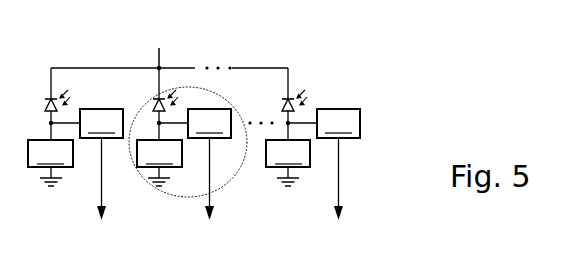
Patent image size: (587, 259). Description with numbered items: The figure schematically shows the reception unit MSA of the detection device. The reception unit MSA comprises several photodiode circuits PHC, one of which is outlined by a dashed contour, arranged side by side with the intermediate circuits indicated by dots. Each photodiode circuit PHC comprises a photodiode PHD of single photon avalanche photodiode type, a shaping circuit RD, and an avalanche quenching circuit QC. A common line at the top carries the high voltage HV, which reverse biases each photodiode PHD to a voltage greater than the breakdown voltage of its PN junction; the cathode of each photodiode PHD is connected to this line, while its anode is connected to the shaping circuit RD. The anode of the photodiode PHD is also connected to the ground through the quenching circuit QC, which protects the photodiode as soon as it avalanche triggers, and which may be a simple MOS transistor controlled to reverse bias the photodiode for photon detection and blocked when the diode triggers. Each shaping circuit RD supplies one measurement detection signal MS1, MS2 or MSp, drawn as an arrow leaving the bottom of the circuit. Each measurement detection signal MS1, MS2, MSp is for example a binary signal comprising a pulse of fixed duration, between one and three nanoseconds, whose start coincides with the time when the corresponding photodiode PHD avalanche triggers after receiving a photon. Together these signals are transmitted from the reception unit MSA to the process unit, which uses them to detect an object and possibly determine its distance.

The high voltage HV is at (169, 48).
The photodiode PHD is at (152, 96).
The shaping circuit RD is at (220, 123).
The avalanche quenching circuit QC is at (169, 163).
The measurement detection signal MS1 is at (103, 193).
The measurement detection signal MS2 is at (211, 193).
The measurement detection signal MSp is at (339, 193).
The photodiode circuit PHC is at (236, 180).
The reception unit MSA is at (390, 105).